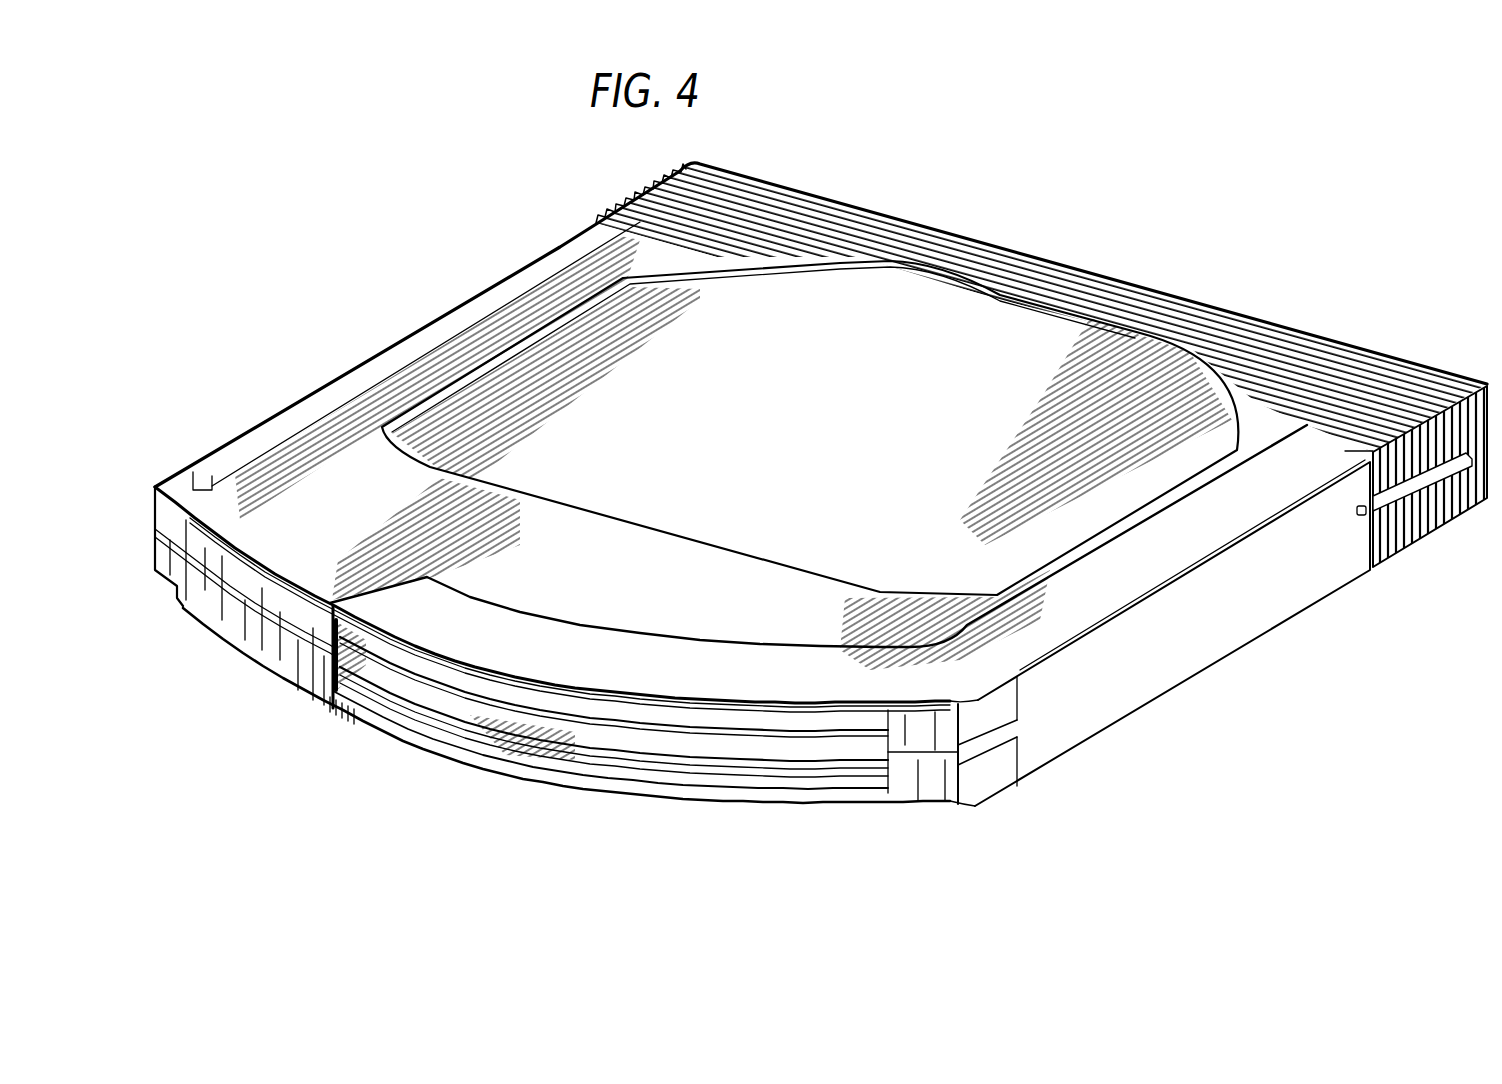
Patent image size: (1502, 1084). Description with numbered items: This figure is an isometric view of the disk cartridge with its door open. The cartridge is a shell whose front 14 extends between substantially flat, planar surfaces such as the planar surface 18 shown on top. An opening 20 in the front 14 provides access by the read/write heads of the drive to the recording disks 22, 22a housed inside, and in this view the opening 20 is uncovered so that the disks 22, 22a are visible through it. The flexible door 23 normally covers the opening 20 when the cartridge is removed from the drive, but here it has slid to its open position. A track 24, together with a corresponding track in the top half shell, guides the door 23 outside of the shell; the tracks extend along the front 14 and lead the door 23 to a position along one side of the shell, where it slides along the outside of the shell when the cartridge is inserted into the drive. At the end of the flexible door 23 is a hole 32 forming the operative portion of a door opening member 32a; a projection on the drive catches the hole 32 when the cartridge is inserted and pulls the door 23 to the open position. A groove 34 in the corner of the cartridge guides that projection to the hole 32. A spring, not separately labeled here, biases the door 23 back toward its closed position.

The front 14 is at (700, 693).
The planar surface 18 is at (322, 468).
The opening 20 is at (710, 793).
The recording disk 22 is at (578, 748).
The recording disk 22a is at (627, 732).
The flexible door 23 is at (1143, 688).
The track 24 is at (417, 733).
The hole 32 is at (1360, 516).
The door opening member 32a is at (1397, 510).
The groove 34 is at (978, 753).